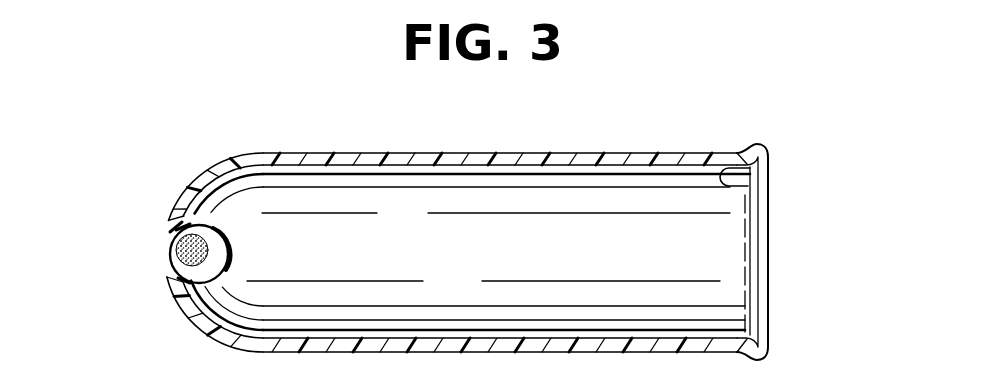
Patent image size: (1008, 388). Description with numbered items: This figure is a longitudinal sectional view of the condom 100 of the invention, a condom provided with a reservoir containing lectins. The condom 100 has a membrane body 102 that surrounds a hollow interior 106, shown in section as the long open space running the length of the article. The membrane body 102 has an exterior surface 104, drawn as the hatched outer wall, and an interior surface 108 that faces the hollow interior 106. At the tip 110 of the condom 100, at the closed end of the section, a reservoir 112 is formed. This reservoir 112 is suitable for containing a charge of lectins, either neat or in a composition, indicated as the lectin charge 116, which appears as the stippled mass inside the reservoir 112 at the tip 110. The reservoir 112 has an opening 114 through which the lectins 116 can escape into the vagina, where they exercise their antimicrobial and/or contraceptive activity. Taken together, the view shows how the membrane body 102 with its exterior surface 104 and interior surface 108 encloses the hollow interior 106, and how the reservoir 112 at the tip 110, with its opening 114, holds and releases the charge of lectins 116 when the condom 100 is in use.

The condom 100 is at (788, 130).
The membrane body 102 is at (500, 261).
The exterior surface 104 is at (536, 152).
The hollow interior 106 is at (726, 258).
The interior surface 108 is at (748, 186).
The tip 110 is at (183, 284).
The reservoir 112 is at (226, 217).
The opening 114 is at (158, 235).
The charge of lectins 116 is at (172, 253).